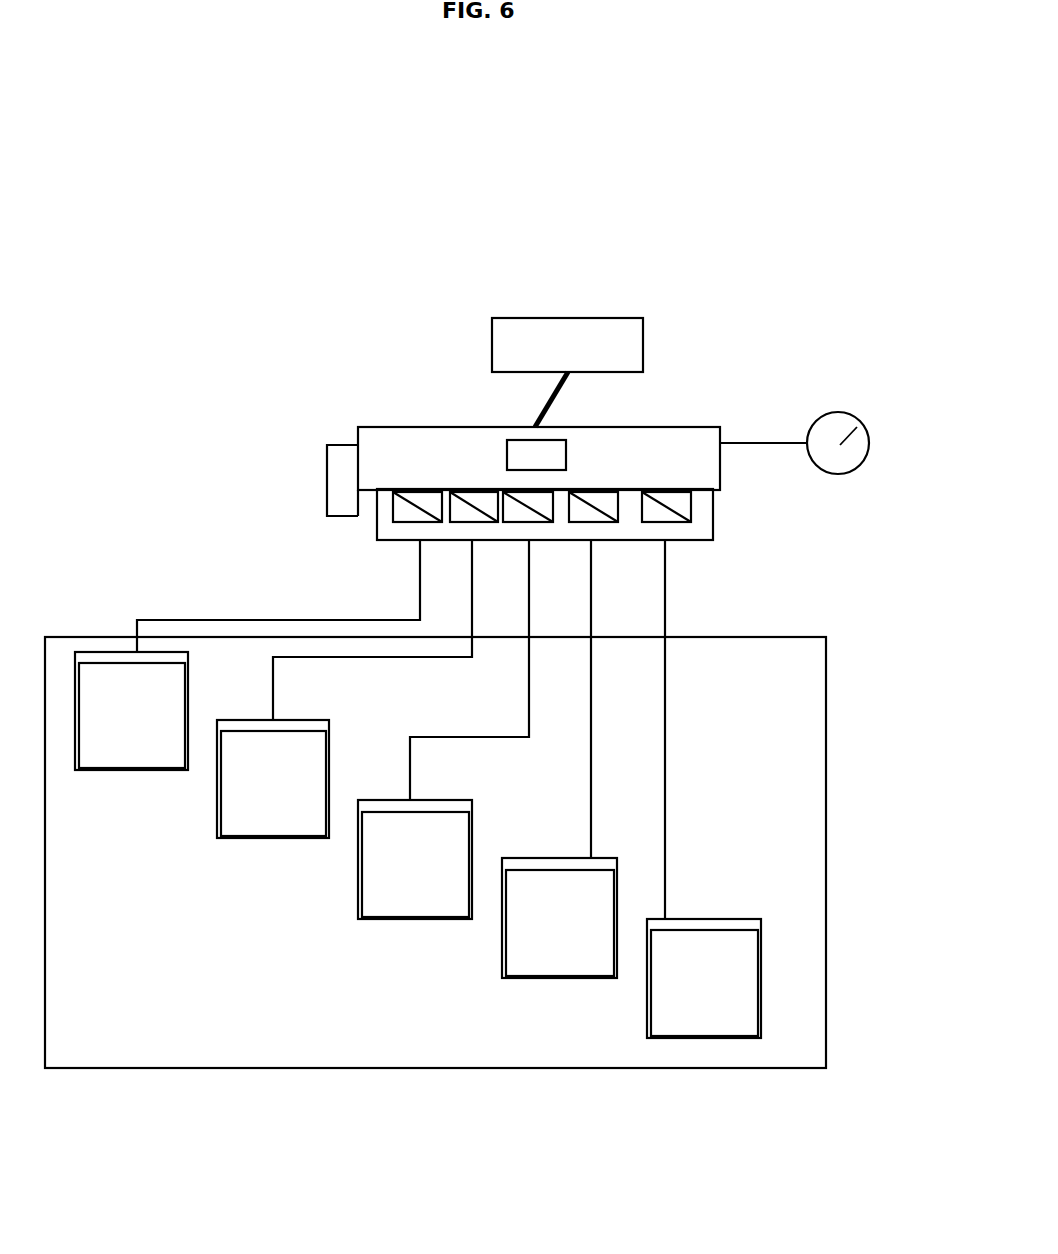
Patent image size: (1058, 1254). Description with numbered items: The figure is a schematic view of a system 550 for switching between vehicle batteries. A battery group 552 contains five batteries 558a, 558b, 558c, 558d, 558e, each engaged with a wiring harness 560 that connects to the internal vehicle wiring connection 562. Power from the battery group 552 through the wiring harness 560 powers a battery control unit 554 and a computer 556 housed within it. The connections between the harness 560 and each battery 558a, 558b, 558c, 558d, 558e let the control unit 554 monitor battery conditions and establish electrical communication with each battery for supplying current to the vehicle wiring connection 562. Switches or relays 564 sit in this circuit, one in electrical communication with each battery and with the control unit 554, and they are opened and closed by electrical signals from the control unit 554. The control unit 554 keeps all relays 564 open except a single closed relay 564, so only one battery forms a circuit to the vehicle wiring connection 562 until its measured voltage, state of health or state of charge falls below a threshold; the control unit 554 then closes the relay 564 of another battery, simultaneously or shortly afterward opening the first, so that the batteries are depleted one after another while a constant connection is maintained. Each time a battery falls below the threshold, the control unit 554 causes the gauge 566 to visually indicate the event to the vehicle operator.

The system 550 is at (731, 194).
The battery group 552 is at (182, 1024).
The battery control unit 554 is at (698, 427).
The computer 556 is at (508, 460).
The battery 558a is at (160, 722).
The battery 558b is at (302, 787).
The battery 558c is at (446, 872).
The battery 558d is at (592, 936).
The battery 558e is at (733, 991).
The wiring harness 560 is at (712, 508).
The internal vehicle wiring connection 562 is at (541, 332).
The relays 564 is at (405, 513).
The gauge 566 is at (866, 459).